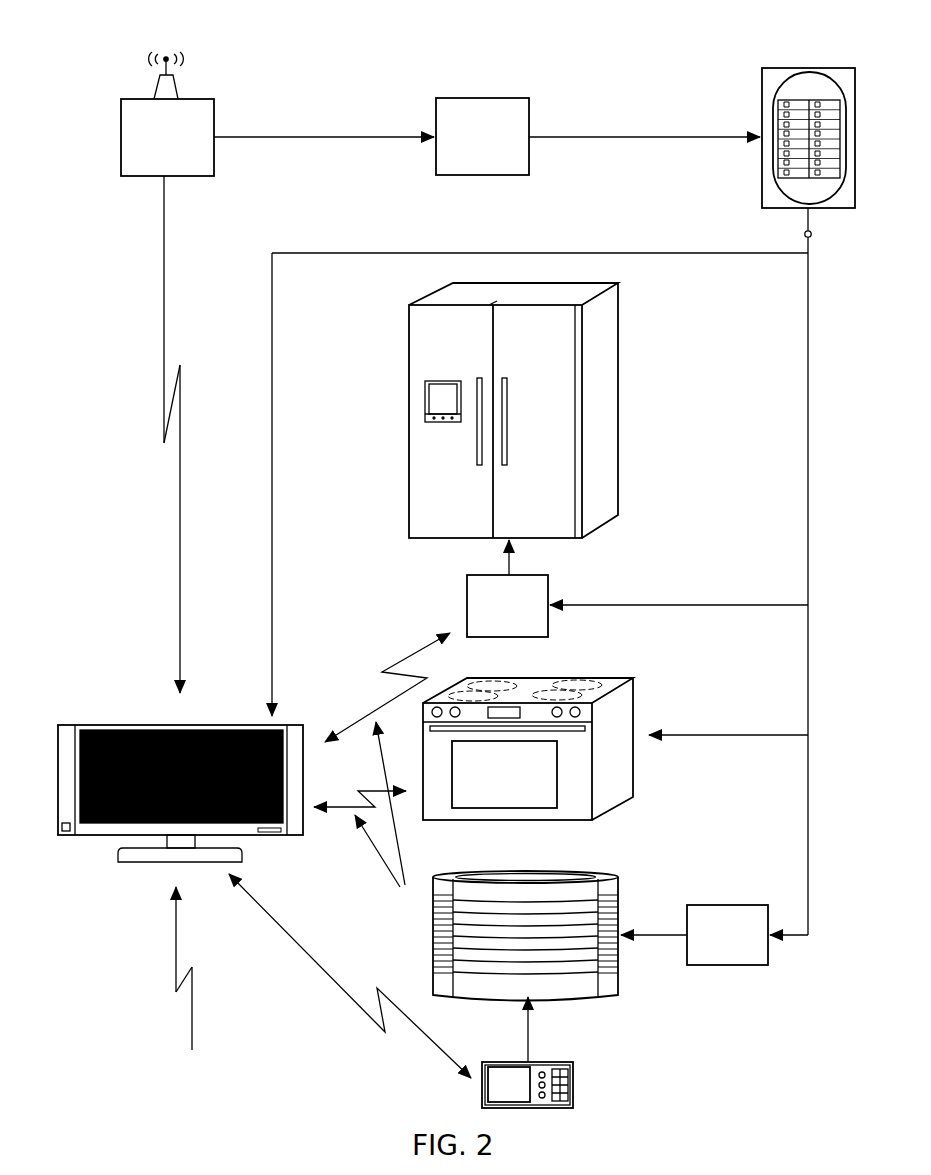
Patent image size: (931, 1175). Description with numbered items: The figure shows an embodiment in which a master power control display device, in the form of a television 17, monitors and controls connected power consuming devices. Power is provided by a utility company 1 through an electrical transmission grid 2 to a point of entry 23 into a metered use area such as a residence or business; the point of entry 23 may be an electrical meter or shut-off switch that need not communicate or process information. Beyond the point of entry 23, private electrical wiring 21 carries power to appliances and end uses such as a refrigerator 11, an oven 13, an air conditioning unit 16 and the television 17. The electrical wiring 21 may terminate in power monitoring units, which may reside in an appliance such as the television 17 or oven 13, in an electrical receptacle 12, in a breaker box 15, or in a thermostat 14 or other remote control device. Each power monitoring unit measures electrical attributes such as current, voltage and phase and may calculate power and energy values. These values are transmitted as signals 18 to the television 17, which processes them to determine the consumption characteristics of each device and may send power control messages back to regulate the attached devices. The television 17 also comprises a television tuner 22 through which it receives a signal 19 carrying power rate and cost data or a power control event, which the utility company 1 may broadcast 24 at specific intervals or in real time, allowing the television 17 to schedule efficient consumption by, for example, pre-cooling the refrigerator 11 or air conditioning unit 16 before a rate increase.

The utility company 1 is at (122, 138).
The electrical transmission grid 2 is at (486, 97).
The refrigerator 11 is at (611, 492).
The electrical receptacle 12 is at (548, 628).
The oven 13 is at (627, 770).
The thermostat 14 is at (573, 1094).
The breaker box 15 is at (730, 905).
The air conditioning unit 16 is at (613, 983).
The television 17 is at (130, 718).
The signals 18 is at (322, 954).
The signal 19 is at (201, 986).
The electrical wiring 21 is at (804, 234).
The television tuner 22 is at (68, 835).
The point of entry 23 is at (774, 66).
The broadcast 24 is at (198, 68).